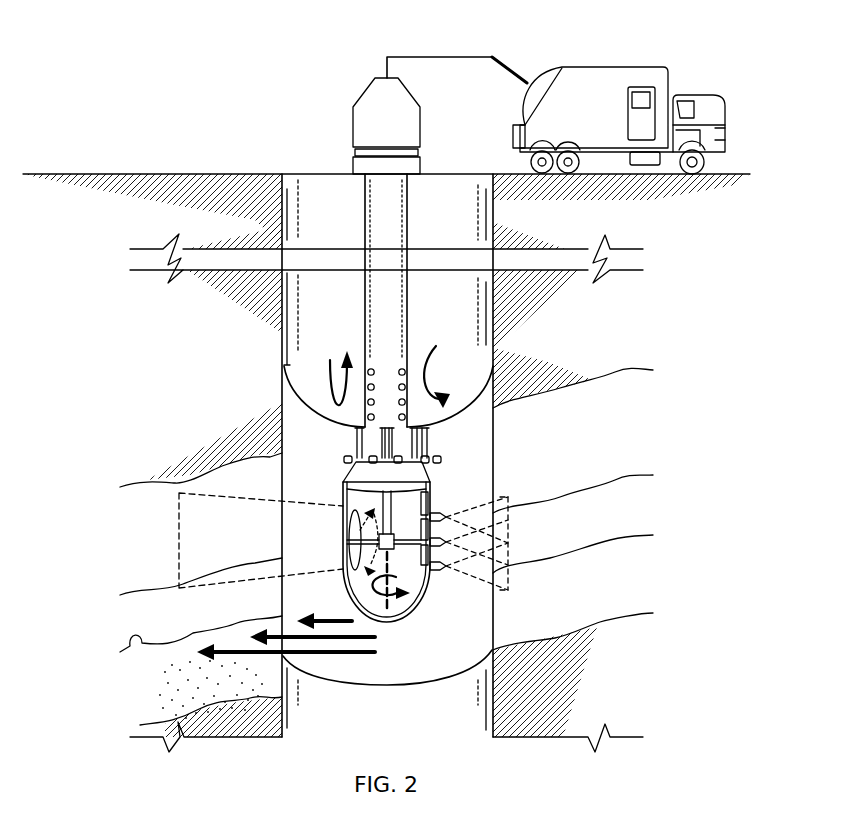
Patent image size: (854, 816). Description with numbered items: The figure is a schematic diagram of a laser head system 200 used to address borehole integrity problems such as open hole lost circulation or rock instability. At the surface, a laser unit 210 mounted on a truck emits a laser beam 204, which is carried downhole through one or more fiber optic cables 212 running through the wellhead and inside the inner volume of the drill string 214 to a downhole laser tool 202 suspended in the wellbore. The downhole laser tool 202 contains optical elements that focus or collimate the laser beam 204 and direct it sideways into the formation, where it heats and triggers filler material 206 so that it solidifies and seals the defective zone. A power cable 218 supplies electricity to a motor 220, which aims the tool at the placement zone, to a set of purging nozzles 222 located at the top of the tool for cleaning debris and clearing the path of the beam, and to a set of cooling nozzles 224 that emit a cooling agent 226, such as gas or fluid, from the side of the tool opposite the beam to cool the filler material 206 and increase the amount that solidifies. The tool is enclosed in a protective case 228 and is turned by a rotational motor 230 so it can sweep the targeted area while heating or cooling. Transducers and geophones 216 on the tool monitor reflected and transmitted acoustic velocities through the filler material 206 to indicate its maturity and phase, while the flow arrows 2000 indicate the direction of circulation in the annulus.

The laser head system 200 is at (196, 94).
The downhole laser tool 202 is at (400, 621).
The laser beam 204 is at (168, 549).
The filler material 206 is at (132, 693).
The laser unit 210 is at (615, 66).
The fiber optic cables 212 is at (352, 125).
The drill string 214 is at (410, 212).
The transducers and geophones 216 is at (371, 350).
The power cable 218 is at (410, 306).
The motor 220 is at (345, 488).
The purging nozzles 222 is at (448, 446).
The cooling nozzles 224 is at (445, 571).
The cooling agent 226 is at (518, 581).
The protective case 228 is at (332, 592).
The rotational motor 230 is at (397, 533).
The fluid flow arrows 2000 is at (118, 645).